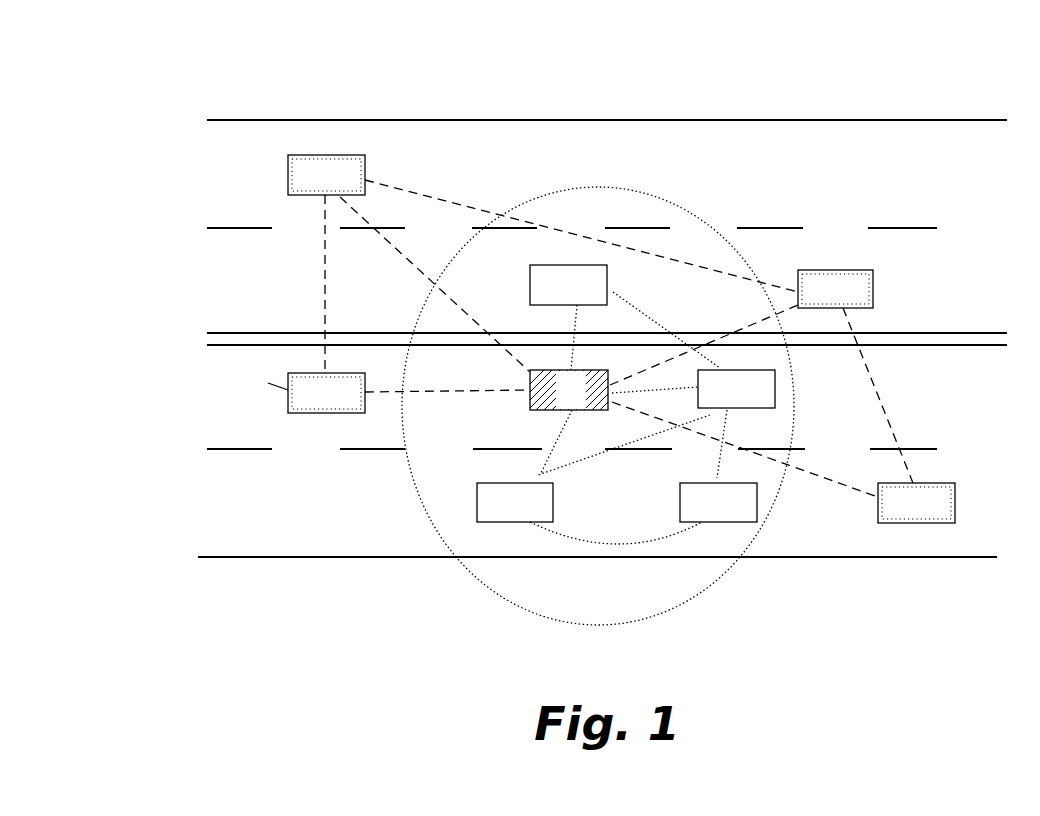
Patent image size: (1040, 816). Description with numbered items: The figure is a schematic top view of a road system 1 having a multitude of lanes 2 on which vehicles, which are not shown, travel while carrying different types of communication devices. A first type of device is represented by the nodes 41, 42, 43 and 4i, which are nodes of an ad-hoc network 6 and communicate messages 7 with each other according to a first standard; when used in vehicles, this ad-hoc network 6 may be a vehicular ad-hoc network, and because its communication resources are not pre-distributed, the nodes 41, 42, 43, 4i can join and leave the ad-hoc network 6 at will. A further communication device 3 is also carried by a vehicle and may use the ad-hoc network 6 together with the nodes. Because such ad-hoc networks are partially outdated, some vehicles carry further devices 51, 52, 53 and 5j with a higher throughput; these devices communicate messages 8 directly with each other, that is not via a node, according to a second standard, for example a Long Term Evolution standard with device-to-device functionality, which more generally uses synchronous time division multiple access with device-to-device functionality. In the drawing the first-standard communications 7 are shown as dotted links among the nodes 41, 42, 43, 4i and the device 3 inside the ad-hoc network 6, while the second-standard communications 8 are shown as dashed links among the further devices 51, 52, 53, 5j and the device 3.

The road system 1 is at (215, 69).
The lane 2 is at (214, 191).
The communication device 3 is at (530, 395).
The node of the ad-hoc network 41 is at (528, 271).
The node of the ad-hoc network 42 is at (553, 503).
The node of the ad-hoc network 43 is at (757, 503).
The node of the ad-hoc network 4i is at (775, 388).
The further communication device 51 is at (365, 163).
The further communication device 52 is at (325, 413).
The further communication device 53 is at (873, 288).
The further communication device 5j is at (957, 505).
The ad-hoc network 6 is at (723, 577).
The messages (communications) of the first standard 7 is at (643, 313).
The messages (communications) of the second standard 8 is at (325, 263).